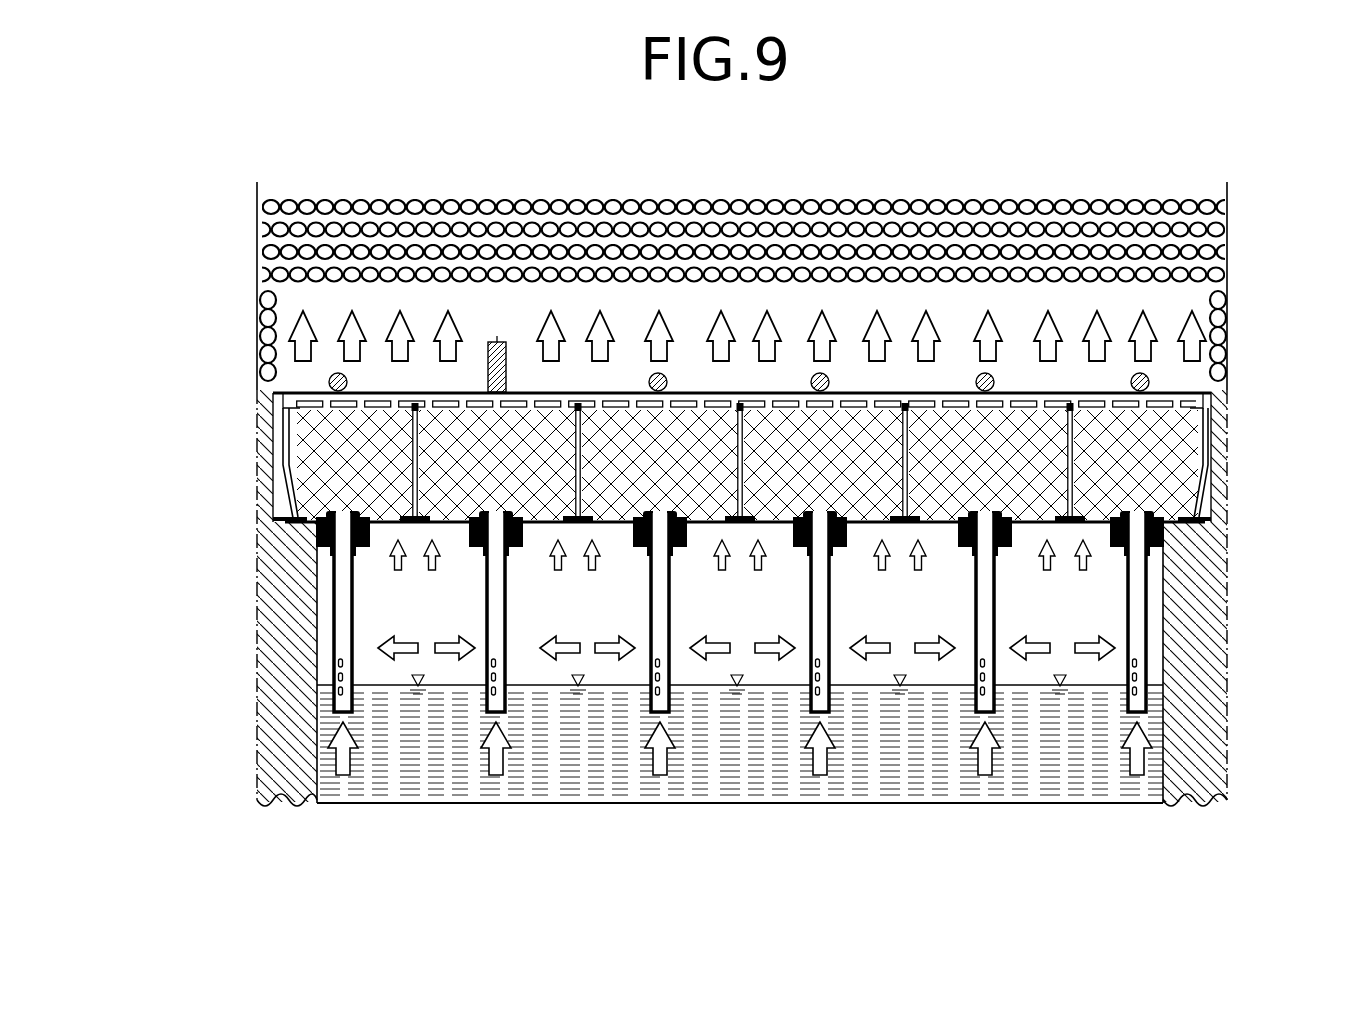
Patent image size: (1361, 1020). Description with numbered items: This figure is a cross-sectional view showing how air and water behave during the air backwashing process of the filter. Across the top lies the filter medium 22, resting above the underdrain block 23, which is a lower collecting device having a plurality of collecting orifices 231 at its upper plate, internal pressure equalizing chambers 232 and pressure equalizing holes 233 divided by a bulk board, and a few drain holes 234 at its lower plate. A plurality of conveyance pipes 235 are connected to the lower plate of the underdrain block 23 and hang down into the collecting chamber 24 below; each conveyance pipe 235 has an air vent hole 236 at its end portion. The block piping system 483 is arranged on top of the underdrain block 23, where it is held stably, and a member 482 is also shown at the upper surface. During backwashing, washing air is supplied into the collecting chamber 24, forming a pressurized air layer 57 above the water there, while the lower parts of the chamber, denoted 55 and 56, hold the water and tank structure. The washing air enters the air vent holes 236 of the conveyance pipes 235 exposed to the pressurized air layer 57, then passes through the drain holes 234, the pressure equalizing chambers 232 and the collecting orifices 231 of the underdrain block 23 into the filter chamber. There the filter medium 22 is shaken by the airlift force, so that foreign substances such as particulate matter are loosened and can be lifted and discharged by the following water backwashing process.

The filter medium 22 is at (258, 237).
The underdrain block 23 is at (276, 478).
The collecting chamber 24 is at (758, 619).
The tank 55 is at (1092, 783).
The water 56 is at (1095, 685).
The pressurized air layer 57 is at (1092, 596).
The collecting orifices 231 is at (300, 403).
The pressure equalizing chambers 232 is at (322, 497).
The pressure equalizing holes 233 is at (408, 414).
The drain holes 234 is at (358, 550).
The conveyance pipes 235 is at (338, 671).
The air vent hole 236 is at (338, 700).
The sensor post 482 is at (506, 343).
The block piping system 483 is at (1152, 382).